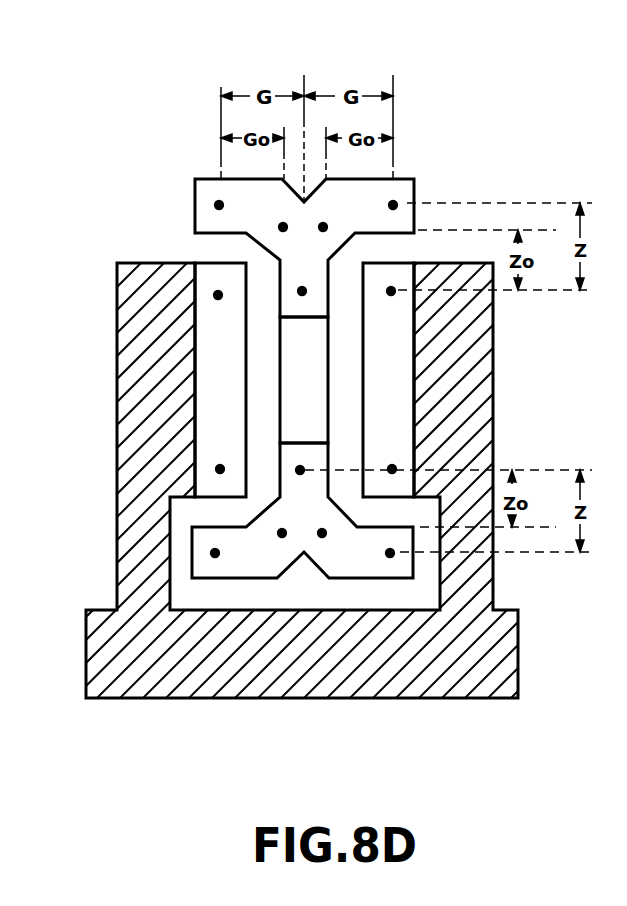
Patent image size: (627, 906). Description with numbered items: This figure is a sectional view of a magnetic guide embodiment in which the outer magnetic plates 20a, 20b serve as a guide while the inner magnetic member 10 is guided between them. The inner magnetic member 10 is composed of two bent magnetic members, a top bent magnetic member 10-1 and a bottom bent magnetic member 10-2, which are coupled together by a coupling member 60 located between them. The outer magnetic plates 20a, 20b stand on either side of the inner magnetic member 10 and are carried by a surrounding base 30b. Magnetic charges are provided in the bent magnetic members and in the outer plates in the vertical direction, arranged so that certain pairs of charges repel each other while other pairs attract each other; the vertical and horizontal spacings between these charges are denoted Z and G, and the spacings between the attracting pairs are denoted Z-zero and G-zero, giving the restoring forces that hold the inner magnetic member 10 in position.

The inner magnetic member 10 is at (337, 385).
The top bent magnetic member 10-1 is at (232, 188).
The bottom bent magnetic member 10-2 is at (237, 563).
The outer magnetic plate 20a is at (208, 272).
The outer magnetic plate 20b is at (395, 263).
The outer yoke / base 30b is at (418, 683).
The coupling member 60 is at (313, 327).